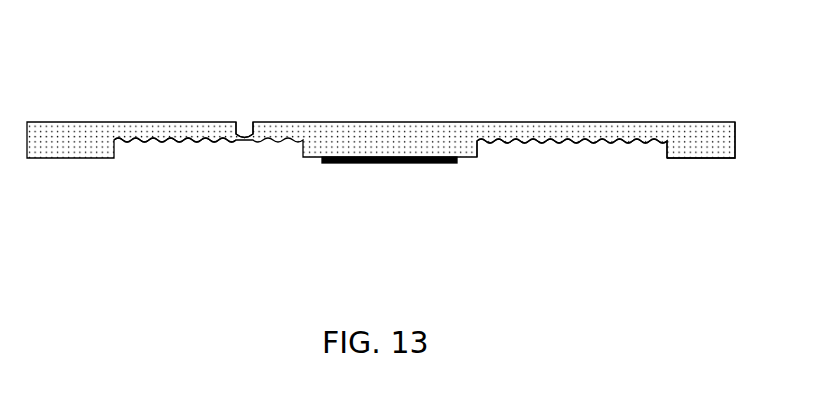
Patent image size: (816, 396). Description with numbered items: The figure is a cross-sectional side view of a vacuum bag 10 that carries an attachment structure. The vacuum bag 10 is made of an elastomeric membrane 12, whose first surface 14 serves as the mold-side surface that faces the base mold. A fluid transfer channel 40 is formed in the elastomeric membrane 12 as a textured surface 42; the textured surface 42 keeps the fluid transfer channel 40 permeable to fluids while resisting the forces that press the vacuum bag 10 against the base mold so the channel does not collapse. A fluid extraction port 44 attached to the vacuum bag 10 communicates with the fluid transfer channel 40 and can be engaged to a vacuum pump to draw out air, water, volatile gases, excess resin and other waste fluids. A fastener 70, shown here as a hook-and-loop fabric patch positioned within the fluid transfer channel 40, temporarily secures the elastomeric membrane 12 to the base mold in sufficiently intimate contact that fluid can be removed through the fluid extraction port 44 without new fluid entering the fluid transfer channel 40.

The vacuum bag 10 is at (386, 123).
The elastomeric membrane 12 is at (421, 128).
The first surface 14 is at (707, 160).
The fluid transfer channel 40 is at (600, 171).
The textured surface 42 is at (180, 143).
The fluid extraction port 44 is at (247, 130).
The fastener 70 is at (412, 163).